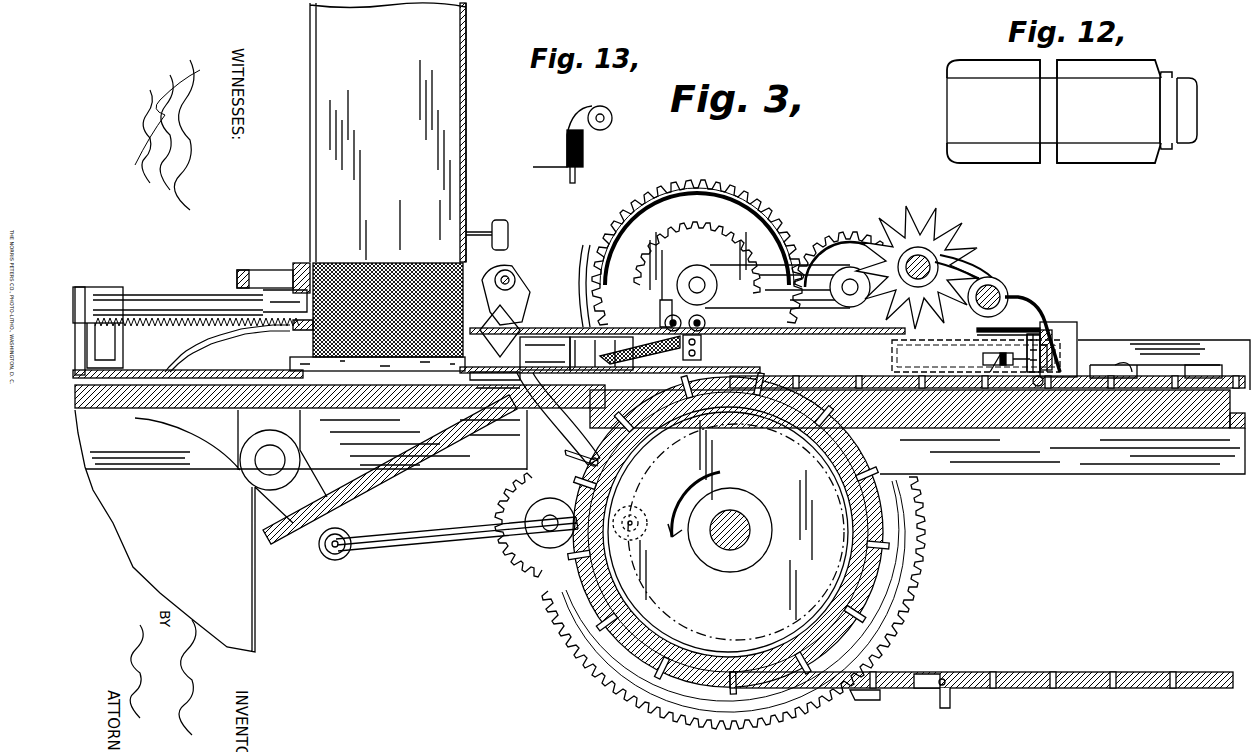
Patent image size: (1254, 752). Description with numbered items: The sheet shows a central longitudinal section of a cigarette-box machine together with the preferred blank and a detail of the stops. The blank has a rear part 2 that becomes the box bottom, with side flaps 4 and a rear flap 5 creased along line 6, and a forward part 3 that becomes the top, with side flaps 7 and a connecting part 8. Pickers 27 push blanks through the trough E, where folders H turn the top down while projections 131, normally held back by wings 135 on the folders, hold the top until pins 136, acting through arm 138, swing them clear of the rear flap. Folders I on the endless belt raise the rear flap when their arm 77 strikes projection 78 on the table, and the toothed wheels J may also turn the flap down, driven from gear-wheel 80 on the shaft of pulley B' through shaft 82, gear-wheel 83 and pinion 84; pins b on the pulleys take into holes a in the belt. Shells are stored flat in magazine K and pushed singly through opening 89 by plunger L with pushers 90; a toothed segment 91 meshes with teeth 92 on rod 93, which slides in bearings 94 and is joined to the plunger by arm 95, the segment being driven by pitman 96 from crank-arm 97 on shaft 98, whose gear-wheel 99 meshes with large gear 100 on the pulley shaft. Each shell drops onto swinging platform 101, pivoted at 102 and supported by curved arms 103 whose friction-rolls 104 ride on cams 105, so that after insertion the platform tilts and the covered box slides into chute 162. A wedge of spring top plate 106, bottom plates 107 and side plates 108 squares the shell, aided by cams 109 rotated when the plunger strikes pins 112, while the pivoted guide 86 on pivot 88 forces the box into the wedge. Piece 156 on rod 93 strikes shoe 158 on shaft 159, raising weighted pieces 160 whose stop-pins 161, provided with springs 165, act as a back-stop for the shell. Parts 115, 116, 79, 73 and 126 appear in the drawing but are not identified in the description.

In FIG. 12, the rear part of the blank 2 is at (1108, 110).
In FIG. 12, the forward part of the blank 3 is at (993, 110).
In FIG. 12, the side flaps 4 is at (1109, 110).
In FIG. 12, the rear flap 5 is at (1178, 110).
In FIG. 3, the rear flap 5 is at (1012, 341).
In FIG. 12, the crease line 6 is at (1171, 109).
In FIG. 12, the side flaps 7 is at (993, 110).
In FIG. 12, the connecting part 8 is at (1048, 111).
In FIG. 13, the weighted pieces 160 is at (590, 108).
In FIG. 3, the weighted pieces 160 is at (532, 306).
In FIG. 13, the springs 165 is at (584, 142).
In FIG. 13, the stop-pins 161 is at (576, 176).
In FIG. 3, the stop-pins 161 is at (498, 340).
In FIG. 3, the magazine K is at (388, 132).
In FIG. 3, the pushers 90 is at (345, 357).
In FIG. 3, the bearings 94 is at (88, 290).
In FIG. 3, the rod 93 is at (150, 296).
In FIG. 3, the piece 156 is at (240, 280).
In FIG. 3, the arm 95 is at (96, 340).
In FIG. 3, the teeth 92 is at (145, 372).
In FIG. 3, the plunger L is at (205, 372).
In FIG. 3, the pin 136 is at (660, 406).
In FIG. 3, the projection 78 is at (1215, 438).
In FIG. 3, the toothed segment 91 is at (201, 531).
In FIG. 3, the pin 112 is at (440, 418).
In FIG. 3, the chute 162 is at (383, 495).
In FIG. 3, the pitman 96 is at (460, 530).
In FIG. 3, the gear-wheel 99 is at (512, 572).
In FIG. 3, the shaft 98 is at (545, 545).
In FIG. 3, the gear-wheel 80 is at (925, 592).
In FIG. 3, the pulley B' is at (767, 532).
In FIG. 3, the pins b is at (882, 506).
In FIG. 3, the friction-rolls 104 is at (640, 455).
In FIG. 3, the large gear 100 is at (712, 418).
In FIG. 3, the cams 105 is at (775, 520).
In FIG. 3, the crank-arm 97 is at (632, 508).
In FIG. 3, the arm 77 is at (945, 676).
In FIG. 3, the holes a is at (1055, 688).
In FIG. 3, the folders I is at (952, 702).
In FIG. 3, the shoe 158 is at (510, 262).
In FIG. 3, the shaft 159 is at (515, 278).
In FIG. 3, the plate 115 is at (586, 248).
In FIG. 3, the top plate 106 is at (636, 290).
In FIG. 3, the bracket 116 is at (660, 312).
In FIG. 3, the gear-wheel 83 is at (770, 208).
In FIG. 3, the shaft 82 is at (717, 288).
In FIG. 3, the upper plate or guide 86 is at (775, 345).
In FIG. 3, the pinion 84 is at (845, 235).
In FIG. 3, the toothed wheels J is at (935, 235).
In FIG. 3, the roller 79 is at (930, 262).
In FIG. 3, the roller 73 is at (1008, 295).
In FIG. 3, the folders H is at (1048, 318).
In FIG. 3, the projections 131 is at (1066, 330).
In FIG. 3, the wings 135 is at (1078, 336).
In FIG. 3, the trough E is at (925, 350).
In FIG. 3, the arm 138 is at (993, 360).
In FIG. 3, the pickers 27 is at (1118, 370).
In FIG. 3, the end panel 126 is at (1198, 376).
In FIG. 3, the swinging platform 101 is at (545, 352).
In FIG. 3, the cams 109 is at (600, 353).
In FIG. 3, the side plates 108 is at (665, 348).
In FIG. 3, the pivot 88 is at (705, 320).
In FIG. 3, the pivot 102 is at (702, 350).
In FIG. 3, the opening 89 is at (510, 372).
In FIG. 3, the bottom plates 107 is at (615, 395).
In FIG. 3, the curved arms 103 is at (508, 392).